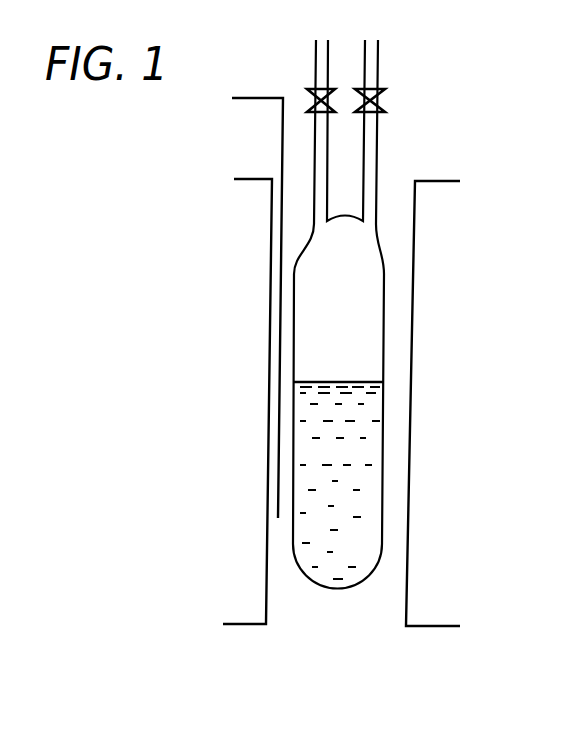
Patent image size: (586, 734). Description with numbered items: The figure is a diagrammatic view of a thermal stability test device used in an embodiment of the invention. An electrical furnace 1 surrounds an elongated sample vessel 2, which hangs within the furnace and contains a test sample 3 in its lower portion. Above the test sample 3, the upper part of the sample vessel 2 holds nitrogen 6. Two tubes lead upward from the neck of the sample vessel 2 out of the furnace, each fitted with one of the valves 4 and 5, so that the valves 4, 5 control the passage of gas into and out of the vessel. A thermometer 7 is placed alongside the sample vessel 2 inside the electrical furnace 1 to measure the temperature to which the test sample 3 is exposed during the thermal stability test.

The electrical furnace 1 is at (432, 243).
The sample vessel 2 is at (383, 398).
The test sample 3 is at (360, 483).
The valve 4 is at (385, 88).
The valve 5 is at (313, 89).
The nitrogen 6 is at (357, 333).
The thermometer 7 is at (278, 453).